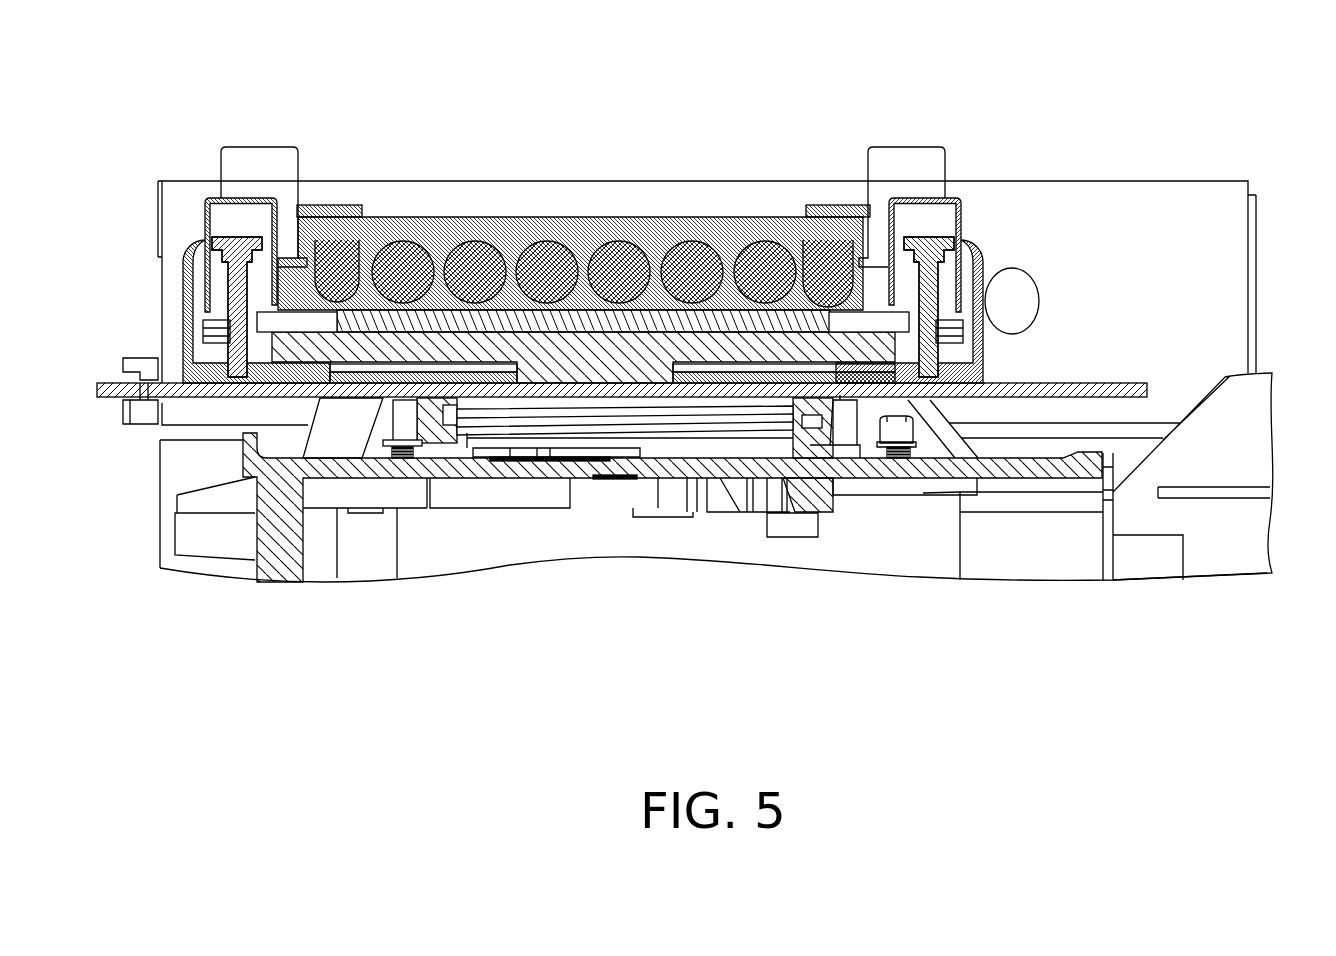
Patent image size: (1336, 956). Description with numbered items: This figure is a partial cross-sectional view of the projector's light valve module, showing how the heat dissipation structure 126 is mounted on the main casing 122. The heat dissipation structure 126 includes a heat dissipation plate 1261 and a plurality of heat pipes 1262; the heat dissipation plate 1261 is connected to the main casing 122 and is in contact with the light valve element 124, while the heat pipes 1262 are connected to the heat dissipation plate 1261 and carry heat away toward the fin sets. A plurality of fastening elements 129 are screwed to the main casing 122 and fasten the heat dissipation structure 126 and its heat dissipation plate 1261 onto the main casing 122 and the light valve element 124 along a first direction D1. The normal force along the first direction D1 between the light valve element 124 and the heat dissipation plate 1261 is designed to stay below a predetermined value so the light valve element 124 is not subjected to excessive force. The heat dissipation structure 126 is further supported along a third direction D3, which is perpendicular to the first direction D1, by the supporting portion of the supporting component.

The main casing 122 is at (880, 527).
The light valve element 124 is at (625, 415).
The heat dissipation structure 126 is at (583, 294).
The heat dissipation plate 1261 is at (431, 398).
The heat pipes 1262 is at (407, 257).
The fastening elements 129 is at (943, 285).
The first direction D1 is at (908, 45).
The third direction D3 is at (1147, 103).